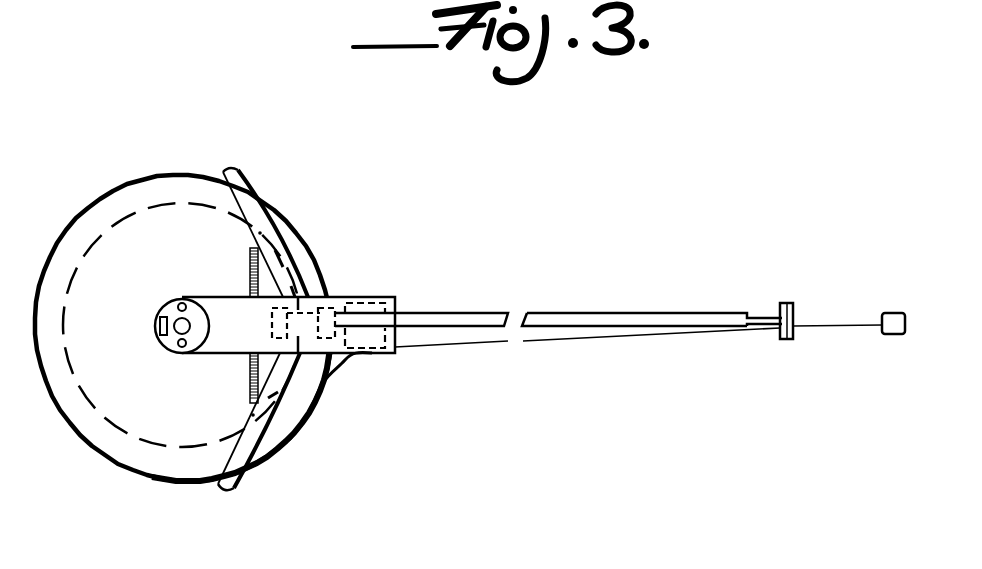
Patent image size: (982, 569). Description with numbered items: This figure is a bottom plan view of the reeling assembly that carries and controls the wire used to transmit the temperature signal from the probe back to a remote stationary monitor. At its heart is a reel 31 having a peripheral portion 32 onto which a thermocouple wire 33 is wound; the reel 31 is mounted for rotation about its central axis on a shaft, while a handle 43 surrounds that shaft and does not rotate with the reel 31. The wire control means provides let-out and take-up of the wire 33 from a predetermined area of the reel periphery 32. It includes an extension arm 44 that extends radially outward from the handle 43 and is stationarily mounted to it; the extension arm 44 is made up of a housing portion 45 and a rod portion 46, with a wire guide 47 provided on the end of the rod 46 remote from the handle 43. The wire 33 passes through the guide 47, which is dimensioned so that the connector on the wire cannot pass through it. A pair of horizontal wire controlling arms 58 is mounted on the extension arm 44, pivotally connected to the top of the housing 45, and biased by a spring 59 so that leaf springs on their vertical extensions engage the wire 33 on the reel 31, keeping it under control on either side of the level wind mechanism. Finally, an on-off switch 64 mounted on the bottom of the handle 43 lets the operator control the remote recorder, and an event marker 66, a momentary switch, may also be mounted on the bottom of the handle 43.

The reel 31 is at (298, 403).
The peripheral portion 32 is at (165, 447).
The thermocouple wire 33 is at (631, 338).
The handle 43 is at (172, 306).
The extension arm 44 is at (407, 293).
The housing portion 45 is at (229, 301).
The rod portion 46 is at (563, 315).
The wire guide 47 is at (791, 301).
The wire controlling arms 58 is at (282, 260).
The spring 59 is at (246, 382).
The on-off switch 64 is at (181, 300).
The event marker 66 is at (177, 348).